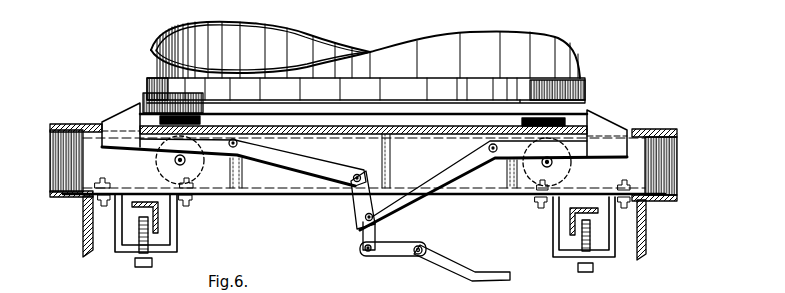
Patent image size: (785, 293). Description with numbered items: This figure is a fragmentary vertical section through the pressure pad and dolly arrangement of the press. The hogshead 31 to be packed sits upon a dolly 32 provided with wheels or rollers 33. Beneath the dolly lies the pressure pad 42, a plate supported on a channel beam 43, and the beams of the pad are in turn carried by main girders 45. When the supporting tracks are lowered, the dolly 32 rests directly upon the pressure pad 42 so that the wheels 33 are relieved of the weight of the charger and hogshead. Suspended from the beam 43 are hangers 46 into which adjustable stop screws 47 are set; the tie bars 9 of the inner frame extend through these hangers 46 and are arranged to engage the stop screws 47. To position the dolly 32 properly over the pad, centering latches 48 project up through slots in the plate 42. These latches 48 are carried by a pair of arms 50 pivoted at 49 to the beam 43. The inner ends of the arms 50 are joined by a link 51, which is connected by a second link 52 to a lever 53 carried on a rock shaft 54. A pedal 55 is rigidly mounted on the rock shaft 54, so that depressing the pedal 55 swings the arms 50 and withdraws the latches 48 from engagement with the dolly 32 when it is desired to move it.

The hogshead 31 is at (519, 36).
The dolly 32 is at (588, 102).
The centering latches 48 is at (128, 115).
The pressure pad 42 is at (656, 128).
The channel beam 43 is at (679, 176).
The main girders 45 is at (84, 238).
The wheels or rollers 33 is at (566, 171).
The arms 50 is at (316, 164).
The pivot 49 is at (231, 149).
The link 51 is at (360, 201).
The second link 52 is at (362, 236).
The lever 53 is at (395, 257).
The rock shaft 54 is at (425, 247).
The pedal 55 is at (462, 270).
The hangers 46 is at (178, 221).
The tie bars 9 is at (153, 234).
The adjustable stop screws 47 is at (137, 264).